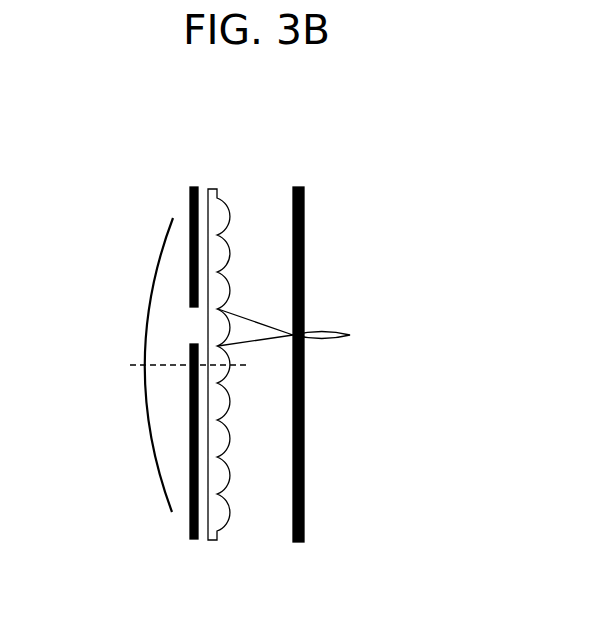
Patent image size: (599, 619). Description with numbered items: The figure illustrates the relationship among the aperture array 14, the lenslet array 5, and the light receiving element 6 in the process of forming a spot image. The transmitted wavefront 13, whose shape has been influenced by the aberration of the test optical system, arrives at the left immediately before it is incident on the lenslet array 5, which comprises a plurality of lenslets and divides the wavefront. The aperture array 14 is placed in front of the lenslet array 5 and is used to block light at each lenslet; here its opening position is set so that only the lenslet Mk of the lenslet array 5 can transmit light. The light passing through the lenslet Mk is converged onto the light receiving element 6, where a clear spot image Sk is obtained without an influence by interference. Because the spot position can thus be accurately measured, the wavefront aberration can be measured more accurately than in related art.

The aperture array 14 is at (193, 187).
The lenslet array 5 is at (212, 189).
The transmitted wavefront 13 is at (165, 480).
The light receiving element 6 is at (305, 427).
The lenslet Mk is at (210, 326).
The spot image Sk is at (346, 330).